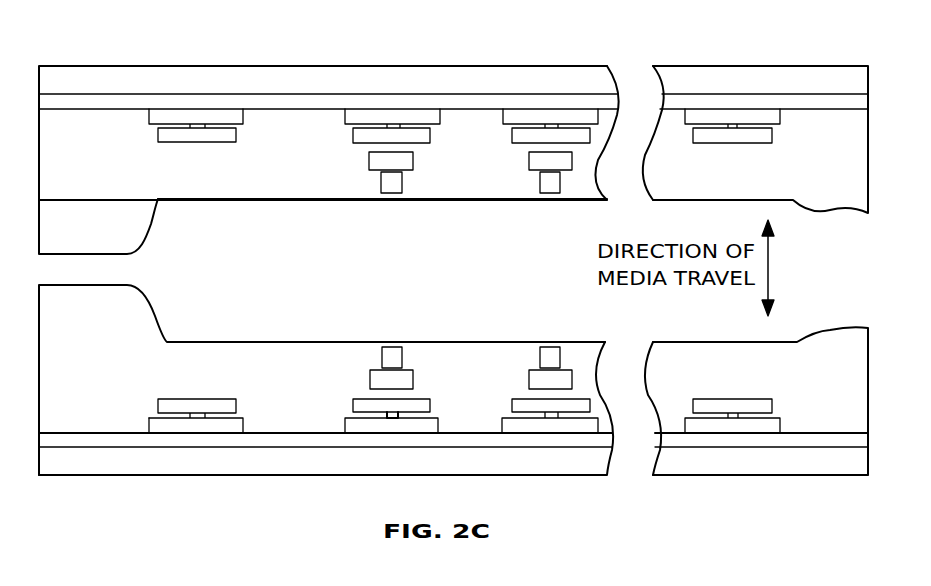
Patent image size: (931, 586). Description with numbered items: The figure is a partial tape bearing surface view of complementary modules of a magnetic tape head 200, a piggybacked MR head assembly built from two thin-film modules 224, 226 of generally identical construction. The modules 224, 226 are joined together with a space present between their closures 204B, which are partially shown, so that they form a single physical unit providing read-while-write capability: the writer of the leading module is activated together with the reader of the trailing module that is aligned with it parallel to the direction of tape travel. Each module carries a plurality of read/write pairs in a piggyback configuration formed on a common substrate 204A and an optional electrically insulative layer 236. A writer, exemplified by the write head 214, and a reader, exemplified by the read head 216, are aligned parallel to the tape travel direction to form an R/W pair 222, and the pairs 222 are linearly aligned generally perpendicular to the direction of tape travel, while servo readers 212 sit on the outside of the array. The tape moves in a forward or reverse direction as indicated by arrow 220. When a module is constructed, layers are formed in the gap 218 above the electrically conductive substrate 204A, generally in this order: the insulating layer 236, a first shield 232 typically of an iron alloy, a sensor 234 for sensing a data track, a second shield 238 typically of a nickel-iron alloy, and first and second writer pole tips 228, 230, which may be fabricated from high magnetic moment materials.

The magnetic tape head 200 is at (381, 48).
The common substrate 204A is at (177, 91).
The closures 204B is at (150, 240).
The servo readers 212 is at (243, 385).
The write head 214 is at (385, 349).
The read head 216 is at (374, 398).
The gap 218 is at (245, 199).
The arrow 220 is at (768, 272).
The R/W pair 222 is at (374, 351).
The thin-film module 224 is at (790, 66).
The thin-film module 226 is at (775, 475).
The first writer pole tip 228 is at (370, 383).
The second writer pole tip 230 is at (380, 352).
The first shield 232 is at (345, 424).
The sensor 234 is at (340, 407).
The insulating layer 236 is at (858, 425).
The second shield 238 is at (338, 404).